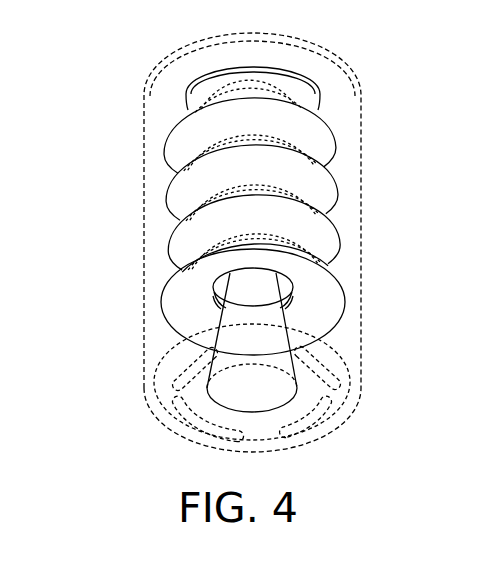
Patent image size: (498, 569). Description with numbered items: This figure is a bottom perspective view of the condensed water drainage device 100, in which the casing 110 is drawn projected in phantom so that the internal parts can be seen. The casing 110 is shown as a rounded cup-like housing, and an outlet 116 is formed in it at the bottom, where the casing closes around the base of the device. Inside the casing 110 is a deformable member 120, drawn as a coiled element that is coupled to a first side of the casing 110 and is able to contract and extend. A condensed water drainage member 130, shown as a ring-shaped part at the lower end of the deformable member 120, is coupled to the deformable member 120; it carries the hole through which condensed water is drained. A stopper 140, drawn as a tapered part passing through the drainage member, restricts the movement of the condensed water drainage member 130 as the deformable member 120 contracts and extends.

The condensed water drainage device 100 is at (75, 33).
The casing 110 is at (143, 210).
The outlet 116 is at (180, 441).
The deformable member 120 is at (182, 150).
The condensed water drainage member 130 is at (193, 283).
The stopper 140 is at (200, 333).